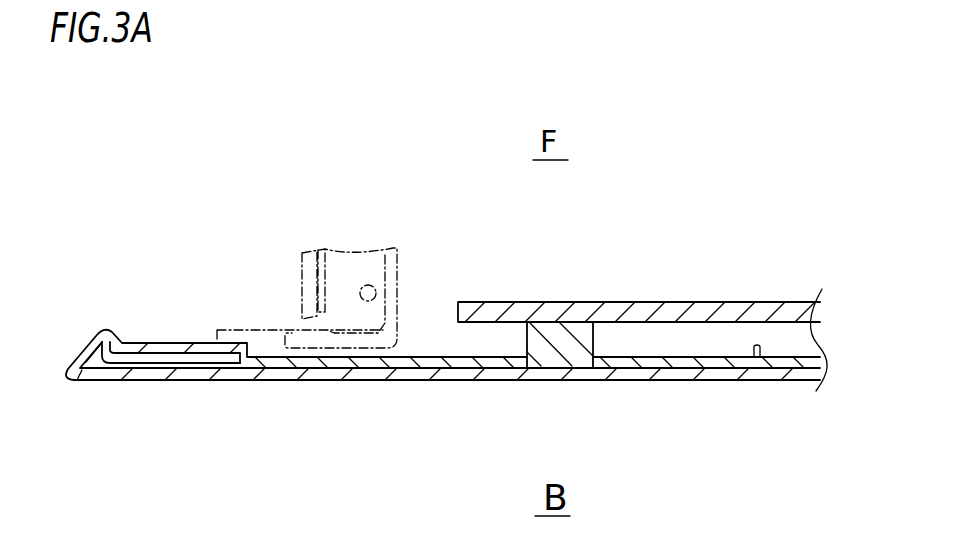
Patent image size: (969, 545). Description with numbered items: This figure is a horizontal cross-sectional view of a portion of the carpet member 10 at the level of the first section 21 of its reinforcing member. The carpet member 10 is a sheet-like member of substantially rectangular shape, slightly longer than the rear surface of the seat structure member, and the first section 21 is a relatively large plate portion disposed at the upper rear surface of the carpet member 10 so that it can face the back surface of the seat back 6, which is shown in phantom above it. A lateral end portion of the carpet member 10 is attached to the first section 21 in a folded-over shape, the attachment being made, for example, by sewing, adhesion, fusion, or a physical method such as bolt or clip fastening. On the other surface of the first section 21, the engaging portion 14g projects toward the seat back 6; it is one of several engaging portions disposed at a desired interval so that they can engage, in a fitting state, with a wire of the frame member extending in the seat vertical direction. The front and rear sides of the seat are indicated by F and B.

The seat back 6 is at (397, 266).
The carpet member 10 is at (97, 372).
The first section 21 is at (230, 363).
The engaging portion 14g is at (588, 340).